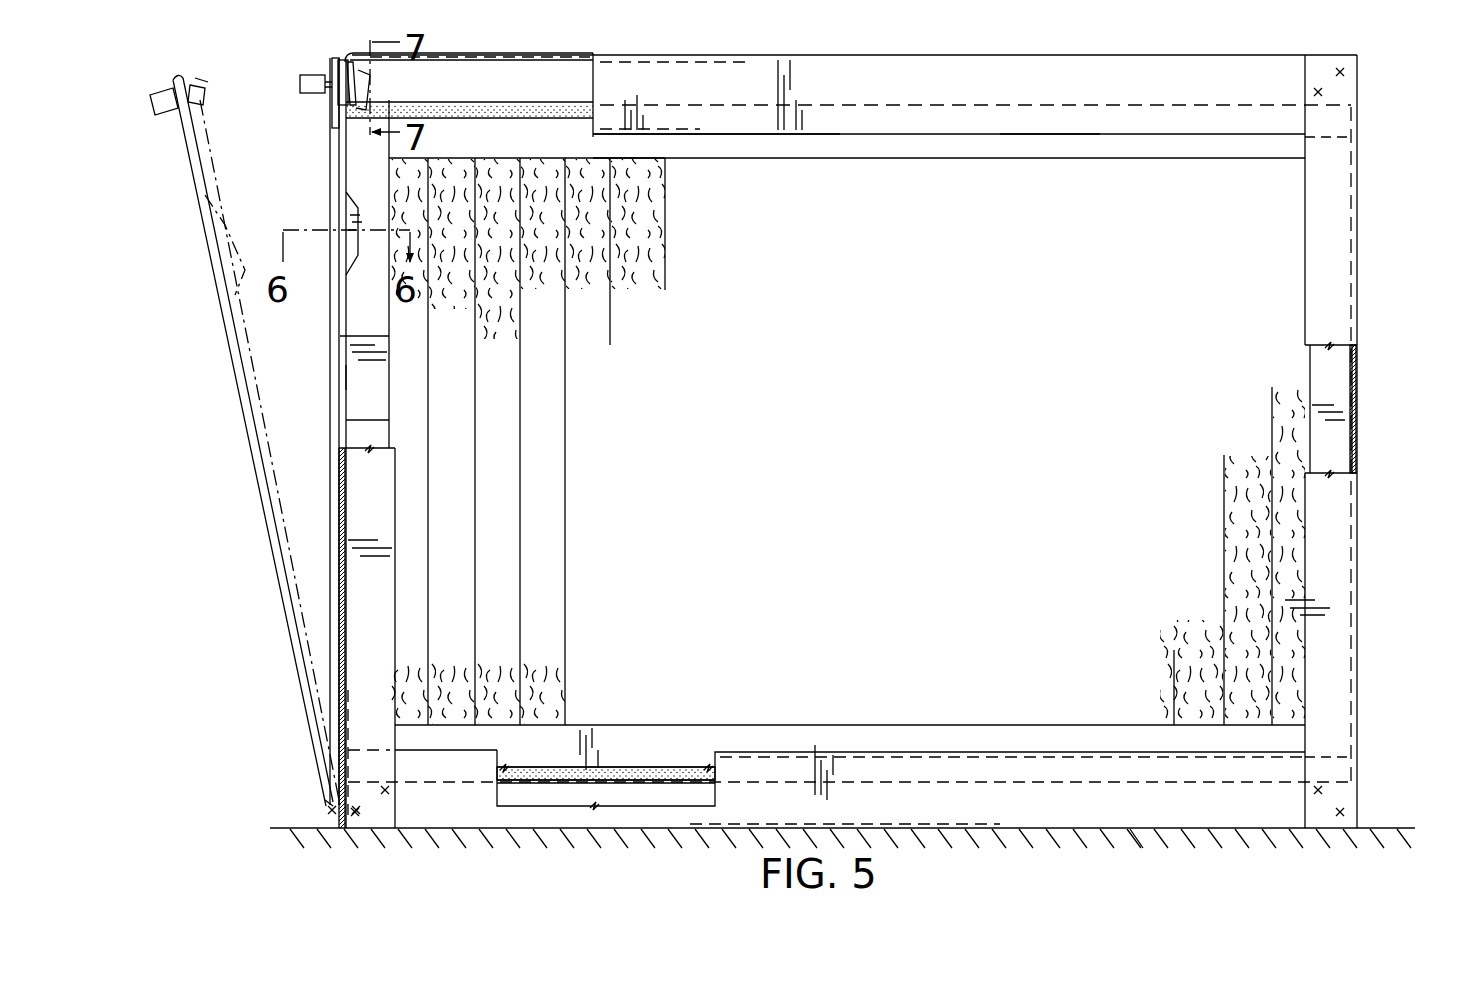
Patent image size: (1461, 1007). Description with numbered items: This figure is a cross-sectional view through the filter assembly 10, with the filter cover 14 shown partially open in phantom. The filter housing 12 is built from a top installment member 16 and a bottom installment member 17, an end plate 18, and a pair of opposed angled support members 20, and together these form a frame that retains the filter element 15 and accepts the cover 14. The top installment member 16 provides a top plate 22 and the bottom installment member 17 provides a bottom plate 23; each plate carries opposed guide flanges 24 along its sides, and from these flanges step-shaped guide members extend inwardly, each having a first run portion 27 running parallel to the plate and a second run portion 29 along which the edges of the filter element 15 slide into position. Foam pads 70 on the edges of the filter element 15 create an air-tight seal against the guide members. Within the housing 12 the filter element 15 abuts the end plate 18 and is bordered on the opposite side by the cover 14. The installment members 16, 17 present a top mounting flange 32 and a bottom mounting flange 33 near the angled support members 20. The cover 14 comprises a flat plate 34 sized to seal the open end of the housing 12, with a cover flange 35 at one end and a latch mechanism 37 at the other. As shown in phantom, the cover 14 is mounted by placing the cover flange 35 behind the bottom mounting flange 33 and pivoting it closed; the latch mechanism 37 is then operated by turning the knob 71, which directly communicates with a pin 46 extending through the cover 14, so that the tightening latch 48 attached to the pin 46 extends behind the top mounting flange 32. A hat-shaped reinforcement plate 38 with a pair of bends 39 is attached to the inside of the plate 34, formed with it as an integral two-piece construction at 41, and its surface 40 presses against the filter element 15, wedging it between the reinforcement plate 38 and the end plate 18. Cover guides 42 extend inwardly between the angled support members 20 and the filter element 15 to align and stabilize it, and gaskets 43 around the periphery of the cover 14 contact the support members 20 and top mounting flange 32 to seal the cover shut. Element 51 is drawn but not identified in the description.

The filter assembly 10 is at (1410, 110).
The filter housing 12 is at (1372, 208).
The filter cover 14 is at (240, 415).
The filter element 15 is at (1310, 393).
The top installment member 16 is at (1058, 138).
The bottom installment member 17 is at (1012, 829).
The end plate 18 is at (1348, 426).
The angled support members 20 is at (375, 505).
The top plate 22 is at (578, 56).
The bottom plate 23 is at (1145, 831).
The guide flanges 24 is at (1156, 116).
The first run portion 27 is at (835, 136).
The second run portion 29 is at (520, 112).
The top mounting flange 32 is at (335, 62).
The bottom mounting flange 33 is at (335, 820).
The flat plate 34 is at (335, 440).
The cover flange 35 is at (352, 830).
The latch mechanism 37 is at (360, 86).
The reinforcement plate 38 is at (348, 378).
The bends 39 is at (340, 336).
The surface 40 is at (346, 420).
The integral two-piece construction 41 is at (333, 395).
The cover guides 42 is at (348, 210).
The gaskets 43 is at (338, 525).
The pin 46 is at (362, 82).
The tightening latch 48 is at (372, 77).
The hinge block 51 is at (338, 92).
The foam pads 70 is at (576, 116).
The turning knob 71 is at (300, 84).